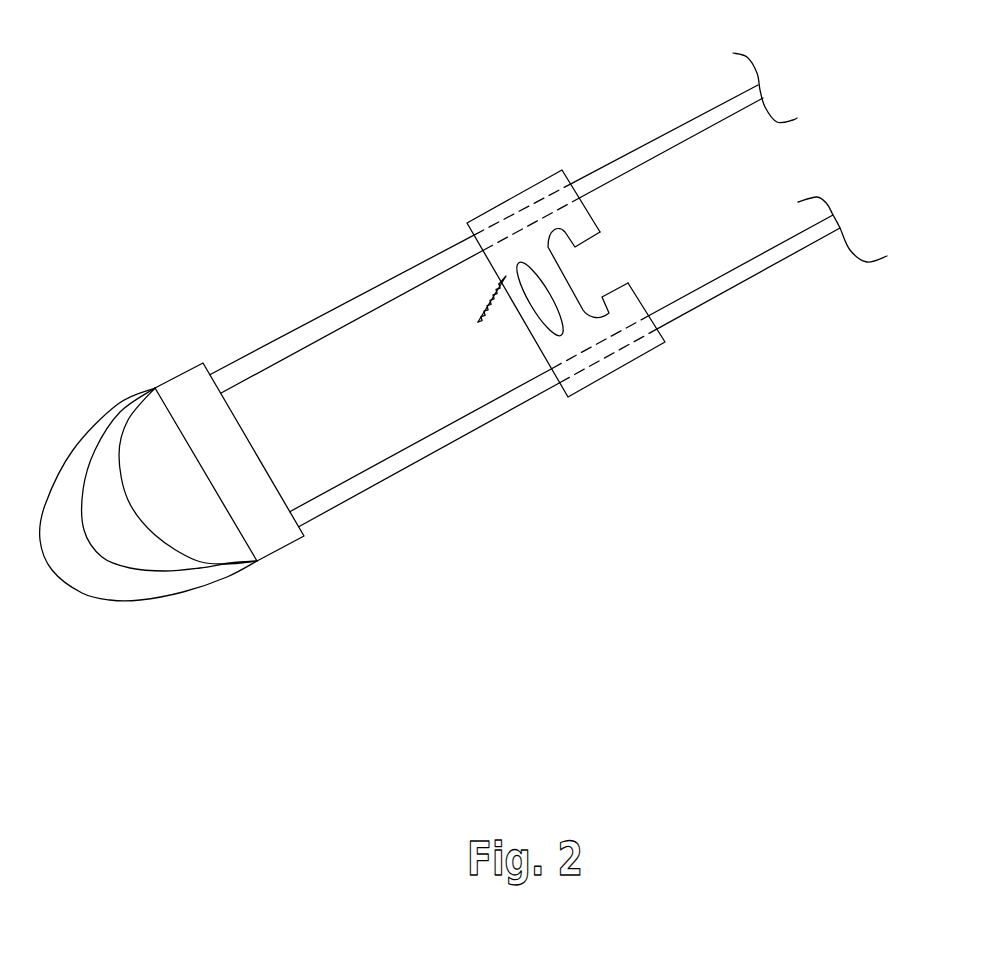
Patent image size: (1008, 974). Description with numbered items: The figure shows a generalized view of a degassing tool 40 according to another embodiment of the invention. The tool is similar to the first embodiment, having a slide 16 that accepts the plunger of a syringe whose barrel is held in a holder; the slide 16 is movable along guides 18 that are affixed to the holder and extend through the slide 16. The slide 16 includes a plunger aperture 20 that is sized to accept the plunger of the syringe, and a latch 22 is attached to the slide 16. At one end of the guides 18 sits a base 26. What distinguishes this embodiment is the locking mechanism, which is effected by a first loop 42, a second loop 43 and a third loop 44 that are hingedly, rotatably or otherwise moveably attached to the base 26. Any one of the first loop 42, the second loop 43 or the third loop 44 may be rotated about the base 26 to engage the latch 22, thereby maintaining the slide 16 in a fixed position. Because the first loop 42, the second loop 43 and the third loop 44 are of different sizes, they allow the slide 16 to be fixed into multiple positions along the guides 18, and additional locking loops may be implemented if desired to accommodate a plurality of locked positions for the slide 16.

The degassing tool 40 is at (412, 74).
The slide 16 is at (627, 365).
The guides 18 is at (757, 277).
The plunger aperture 20 is at (612, 267).
The latch 22 is at (480, 310).
The base 26 is at (304, 536).
The first loop 42 is at (193, 561).
The second loop 43 is at (132, 570).
The third loop 44 is at (82, 593).